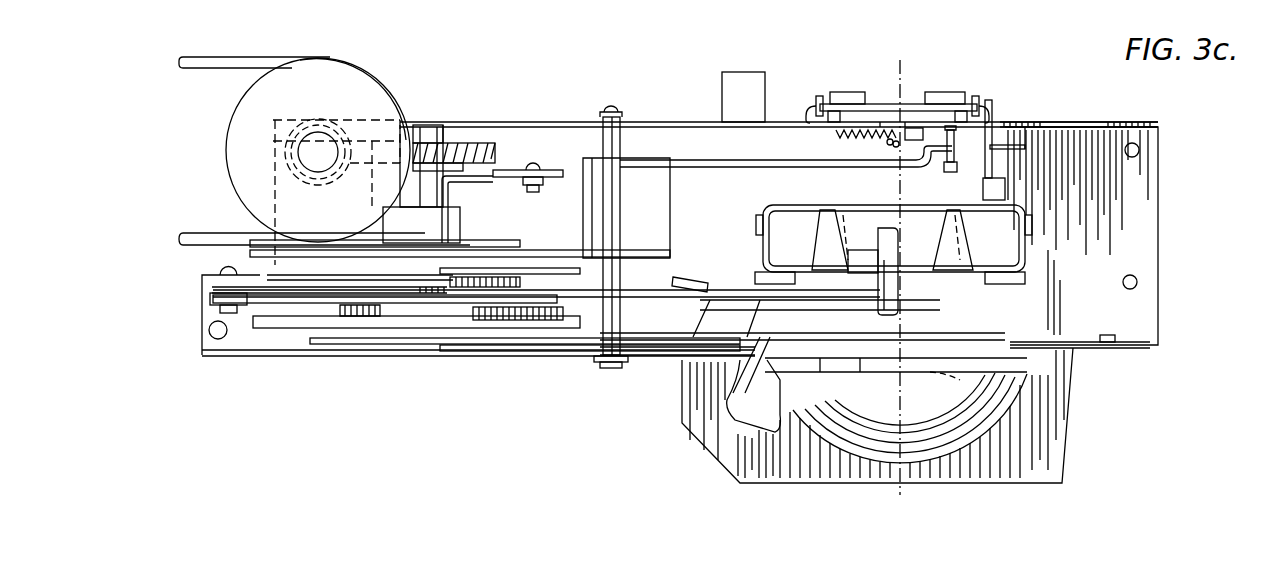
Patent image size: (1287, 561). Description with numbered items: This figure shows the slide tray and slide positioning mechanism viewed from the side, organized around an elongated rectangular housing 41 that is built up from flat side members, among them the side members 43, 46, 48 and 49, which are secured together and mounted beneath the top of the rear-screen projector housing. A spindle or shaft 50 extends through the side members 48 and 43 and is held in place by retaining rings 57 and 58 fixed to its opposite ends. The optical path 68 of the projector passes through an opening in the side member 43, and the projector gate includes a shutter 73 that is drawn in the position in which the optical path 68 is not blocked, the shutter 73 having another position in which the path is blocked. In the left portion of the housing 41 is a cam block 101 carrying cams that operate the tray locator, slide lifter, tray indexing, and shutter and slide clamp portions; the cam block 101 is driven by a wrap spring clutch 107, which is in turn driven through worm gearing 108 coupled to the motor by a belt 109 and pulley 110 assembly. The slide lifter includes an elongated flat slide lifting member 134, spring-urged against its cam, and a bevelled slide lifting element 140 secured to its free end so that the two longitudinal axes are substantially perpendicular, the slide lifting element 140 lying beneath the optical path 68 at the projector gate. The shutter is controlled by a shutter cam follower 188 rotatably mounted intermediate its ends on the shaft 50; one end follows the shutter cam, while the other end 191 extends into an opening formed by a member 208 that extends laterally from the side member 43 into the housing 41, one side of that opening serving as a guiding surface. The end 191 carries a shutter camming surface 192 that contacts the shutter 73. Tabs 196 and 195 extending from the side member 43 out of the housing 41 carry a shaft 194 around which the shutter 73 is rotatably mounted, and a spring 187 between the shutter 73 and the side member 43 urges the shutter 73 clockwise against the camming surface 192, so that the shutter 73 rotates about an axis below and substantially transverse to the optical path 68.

The elongated rectangular housing 41 is at (1166, 232).
The side member 43 is at (1046, 126).
The side member 46 is at (310, 358).
The side member 48 is at (668, 355).
The side member 49 is at (1138, 350).
The spindle or shaft 50 is at (622, 142).
The retaining ring 57 is at (598, 113).
The retaining ring 58 is at (598, 362).
The optical path 68 is at (905, 60).
The shutter 73 is at (836, 188).
The cam block 101 is at (410, 356).
The wrap spring clutch 107 is at (456, 218).
The worm gearing 108 is at (298, 126).
The belt 109 is at (217, 55).
The pulley 110 is at (232, 123).
The slide lifting member 134 is at (715, 290).
The bevelled slide lifting element 140 is at (895, 270).
The spring 187 is at (852, 133).
The shutter cam follower 188 is at (672, 206).
The end of cam follower 191 is at (1025, 150).
The shutter camming surface 192 is at (950, 172).
The shaft 194 is at (883, 103).
The tab 195 is at (976, 95).
The tab 196 is at (822, 95).
The laterally extending member 208 is at (994, 132).